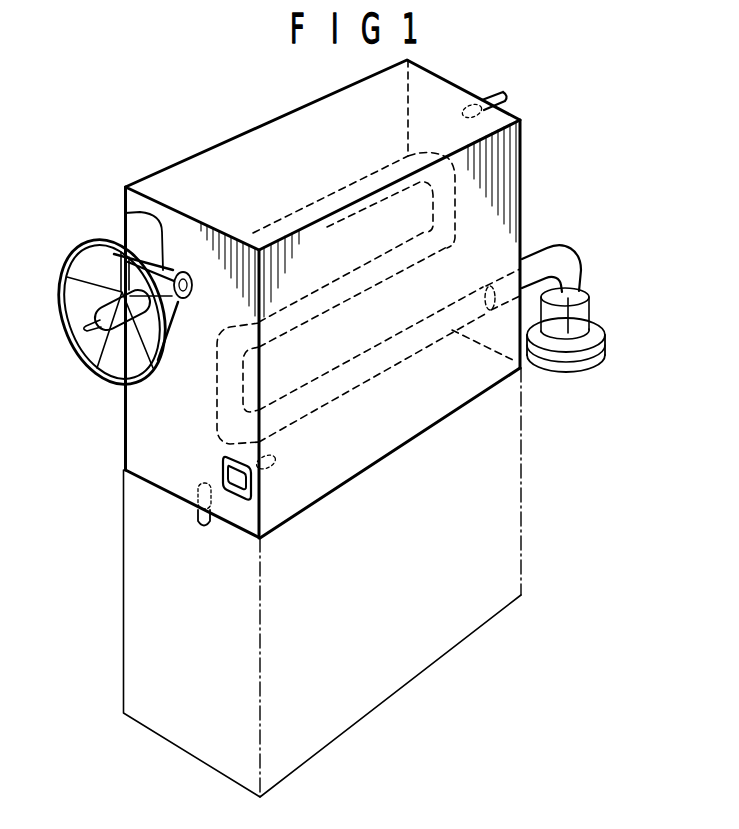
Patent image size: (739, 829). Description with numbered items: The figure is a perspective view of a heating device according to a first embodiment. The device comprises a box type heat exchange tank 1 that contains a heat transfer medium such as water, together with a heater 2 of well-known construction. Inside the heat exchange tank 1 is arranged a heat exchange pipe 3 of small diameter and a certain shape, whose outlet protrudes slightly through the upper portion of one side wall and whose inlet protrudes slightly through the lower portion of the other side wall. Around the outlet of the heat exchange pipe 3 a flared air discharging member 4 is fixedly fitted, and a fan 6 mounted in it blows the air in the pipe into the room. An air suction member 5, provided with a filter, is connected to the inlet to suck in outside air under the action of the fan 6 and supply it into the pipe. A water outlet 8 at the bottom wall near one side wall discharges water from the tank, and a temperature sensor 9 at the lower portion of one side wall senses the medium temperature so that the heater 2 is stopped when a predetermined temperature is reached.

The heat exchange tank 1 is at (227, 157).
The heater 2 is at (512, 580).
The heat exchange pipe 3 is at (124, 213).
The air discharging member 4 is at (72, 247).
The air suction member 5 is at (605, 324).
The fan 6 is at (110, 333).
The water outlet 8 is at (198, 514).
The temperature sensor 9 is at (242, 498).